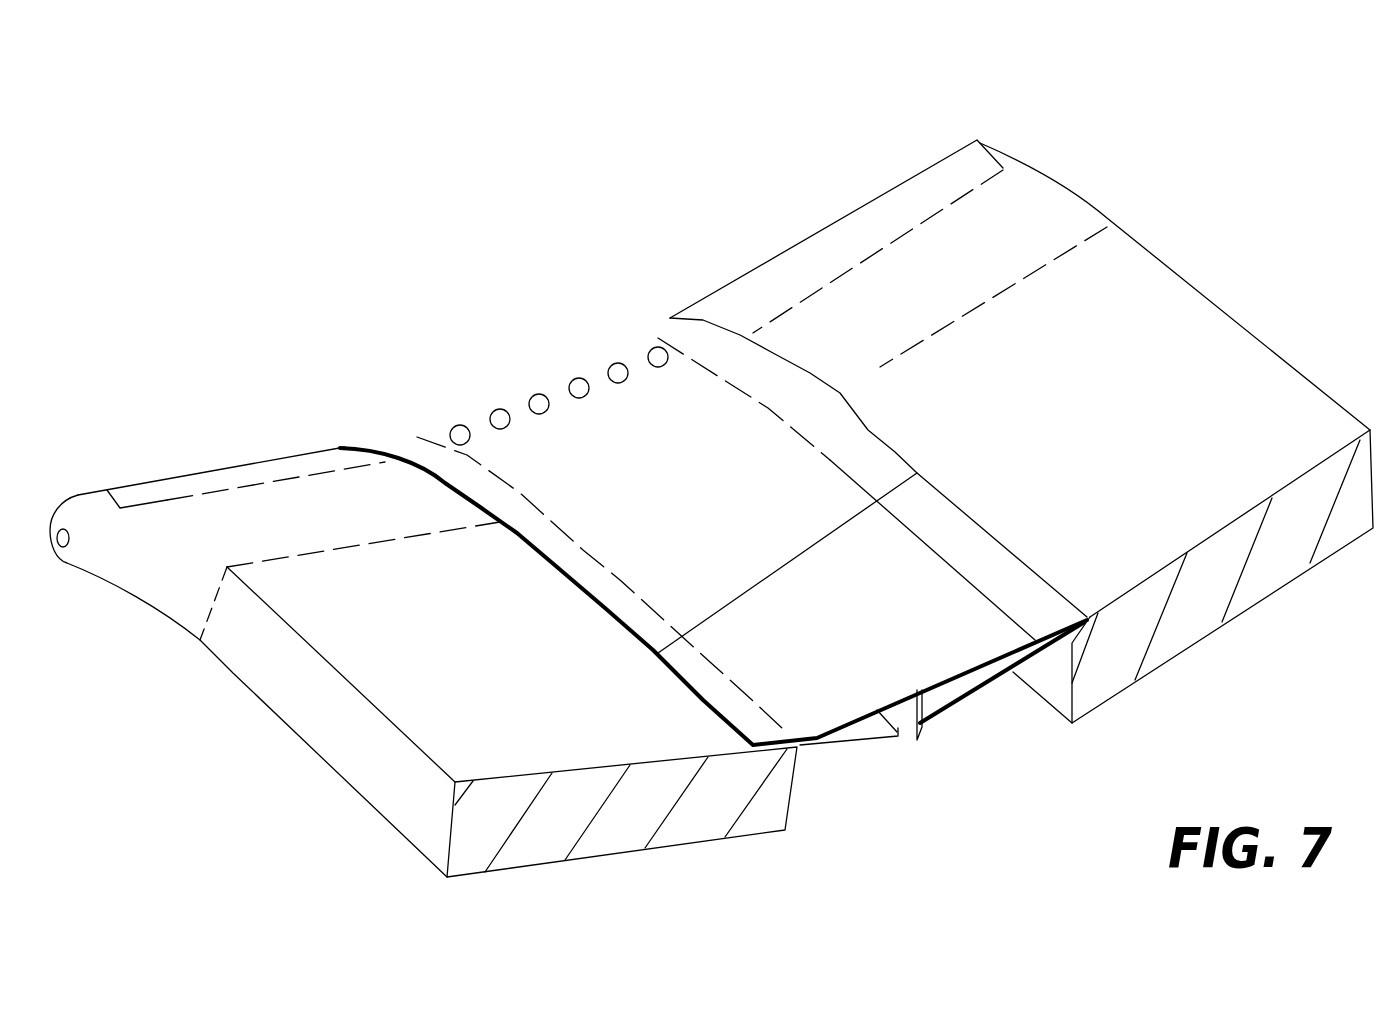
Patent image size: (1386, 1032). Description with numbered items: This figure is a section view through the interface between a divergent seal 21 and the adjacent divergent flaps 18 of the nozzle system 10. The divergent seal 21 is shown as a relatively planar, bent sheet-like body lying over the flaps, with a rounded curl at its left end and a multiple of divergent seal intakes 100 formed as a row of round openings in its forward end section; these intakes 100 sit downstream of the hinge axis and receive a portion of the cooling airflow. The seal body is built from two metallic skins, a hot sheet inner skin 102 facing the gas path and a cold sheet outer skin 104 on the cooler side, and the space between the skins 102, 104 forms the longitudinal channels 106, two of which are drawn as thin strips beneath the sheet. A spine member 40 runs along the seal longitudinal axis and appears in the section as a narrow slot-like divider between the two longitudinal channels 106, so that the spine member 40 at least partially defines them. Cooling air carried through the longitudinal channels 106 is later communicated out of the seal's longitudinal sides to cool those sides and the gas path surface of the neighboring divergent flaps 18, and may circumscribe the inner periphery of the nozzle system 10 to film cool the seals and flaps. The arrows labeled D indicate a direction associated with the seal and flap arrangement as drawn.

The divergent flap 18 is at (237, 450).
The divergent seal 21 is at (668, 297).
The divergent seal intakes 100 is at (539, 394).
The nozzle system 10 is at (657, 653).
The direction arrow D is at (1193, 498).
The hot sheet inner skin 102 is at (997, 657).
The cold sheet outer skin 104 is at (837, 744).
The longitudinal channels 106 is at (877, 723).
The spine member 40 is at (927, 740).